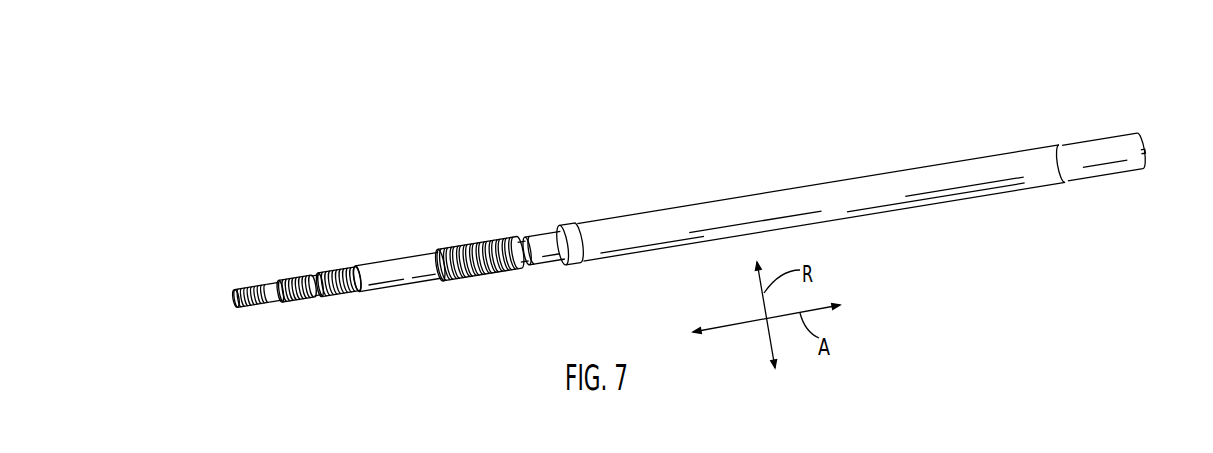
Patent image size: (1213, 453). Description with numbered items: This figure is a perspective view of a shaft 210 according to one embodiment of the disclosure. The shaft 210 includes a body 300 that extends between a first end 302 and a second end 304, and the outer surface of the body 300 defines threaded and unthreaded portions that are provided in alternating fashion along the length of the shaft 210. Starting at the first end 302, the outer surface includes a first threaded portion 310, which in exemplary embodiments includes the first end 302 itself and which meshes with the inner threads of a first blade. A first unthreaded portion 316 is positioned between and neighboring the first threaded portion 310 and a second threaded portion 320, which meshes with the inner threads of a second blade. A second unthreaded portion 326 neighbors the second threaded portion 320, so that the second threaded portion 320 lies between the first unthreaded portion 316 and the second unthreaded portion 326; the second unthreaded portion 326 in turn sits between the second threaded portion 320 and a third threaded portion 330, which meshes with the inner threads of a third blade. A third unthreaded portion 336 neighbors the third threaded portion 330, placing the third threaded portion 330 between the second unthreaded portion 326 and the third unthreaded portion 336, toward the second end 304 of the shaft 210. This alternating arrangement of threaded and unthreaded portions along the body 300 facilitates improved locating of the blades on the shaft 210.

The shaft 210 is at (436, 209).
The body 300 is at (707, 219).
The first end 302 is at (201, 279).
The second end 304 is at (1126, 115).
The first threaded portion 310 is at (244, 267).
The first unthreaded portion 316 is at (282, 254).
The second threaded portion 320 is at (312, 245).
The second unthreaded portion 326 is at (341, 252).
The third threaded portion 330 is at (470, 215).
The third unthreaded portion 336 is at (543, 225).